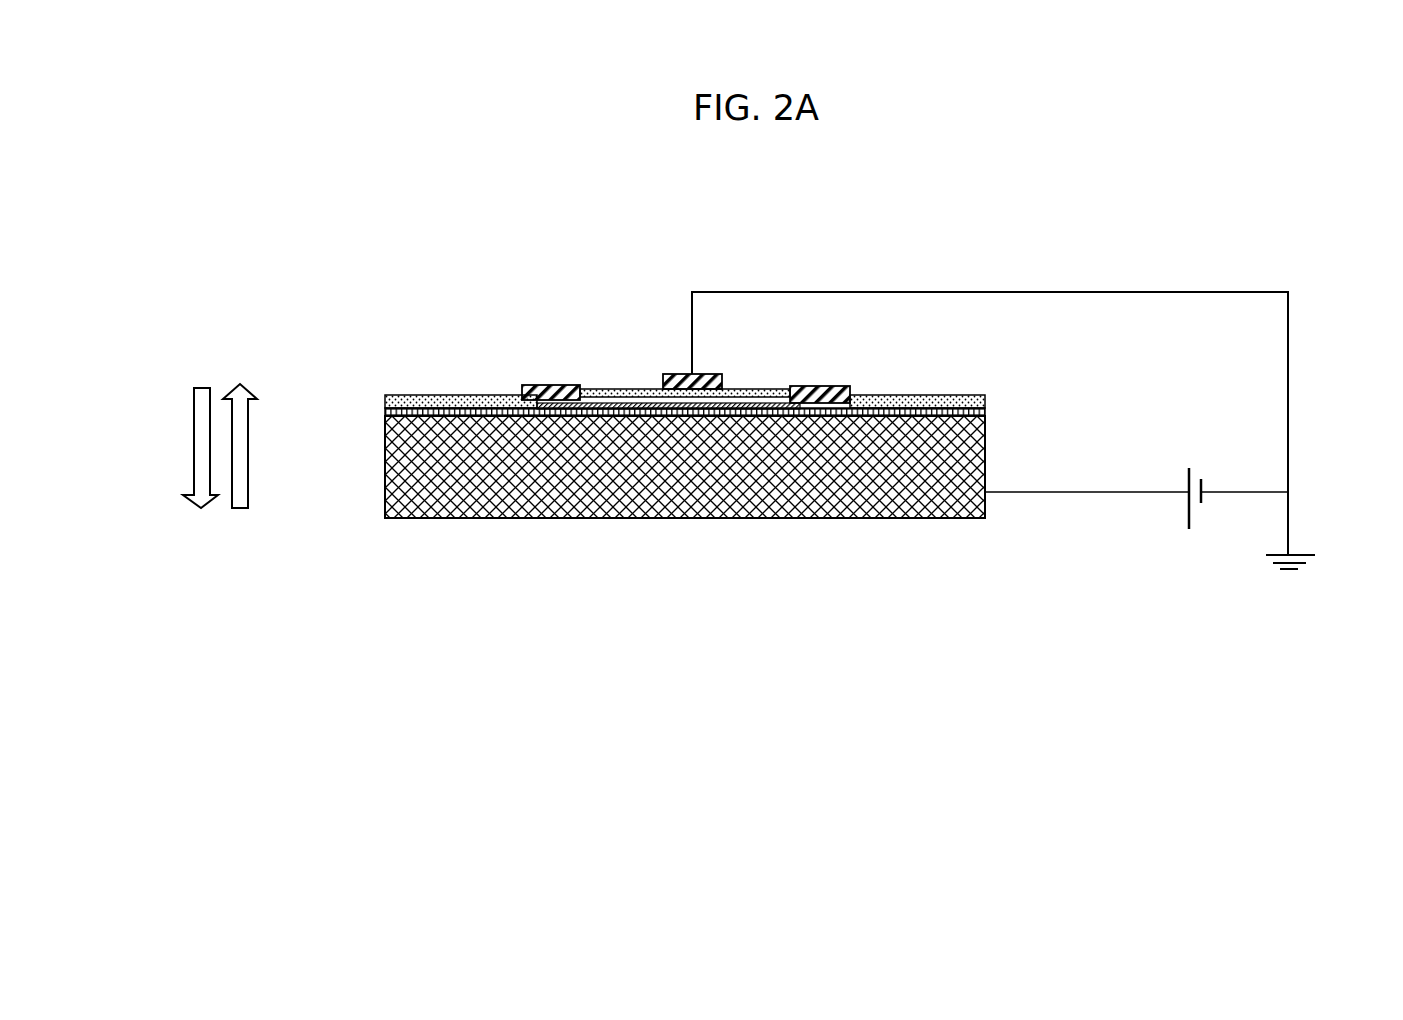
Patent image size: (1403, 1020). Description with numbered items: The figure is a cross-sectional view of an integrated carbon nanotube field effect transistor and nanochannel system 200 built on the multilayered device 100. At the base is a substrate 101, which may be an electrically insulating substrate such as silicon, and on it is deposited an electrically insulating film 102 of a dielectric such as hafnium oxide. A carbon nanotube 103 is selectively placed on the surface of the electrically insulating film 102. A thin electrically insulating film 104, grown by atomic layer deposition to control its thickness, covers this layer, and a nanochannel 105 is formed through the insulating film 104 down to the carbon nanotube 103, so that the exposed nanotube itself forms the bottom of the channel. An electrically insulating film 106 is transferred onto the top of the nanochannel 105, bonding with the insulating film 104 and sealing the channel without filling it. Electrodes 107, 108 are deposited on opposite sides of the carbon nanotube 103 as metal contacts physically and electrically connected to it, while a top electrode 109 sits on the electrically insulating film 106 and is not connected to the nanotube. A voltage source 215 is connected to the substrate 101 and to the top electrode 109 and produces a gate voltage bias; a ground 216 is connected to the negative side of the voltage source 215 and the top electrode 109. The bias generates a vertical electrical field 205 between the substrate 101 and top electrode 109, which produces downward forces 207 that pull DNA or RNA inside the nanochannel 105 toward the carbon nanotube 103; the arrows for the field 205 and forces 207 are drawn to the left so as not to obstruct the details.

The integrated carbon nanotube field effect transistor and nanochannel system 200 is at (390, 163).
The multilayered device 100 is at (365, 377).
The substrate 101 is at (985, 452).
The electrically insulating film 102 is at (985, 412).
The carbon nanotube 103 is at (783, 403).
The electrically insulating film 104 is at (415, 401).
The nanochannel 105 is at (684, 414).
The electrically insulating film 106 is at (613, 388).
The electrode 107 is at (825, 388).
The electrode 108 is at (535, 388).
The top electrode 109 is at (674, 374).
The vertical electrical field 205 is at (253, 400).
The downward forces 207 is at (200, 507).
The voltage source 215 is at (1173, 527).
The ground 216 is at (1321, 578).